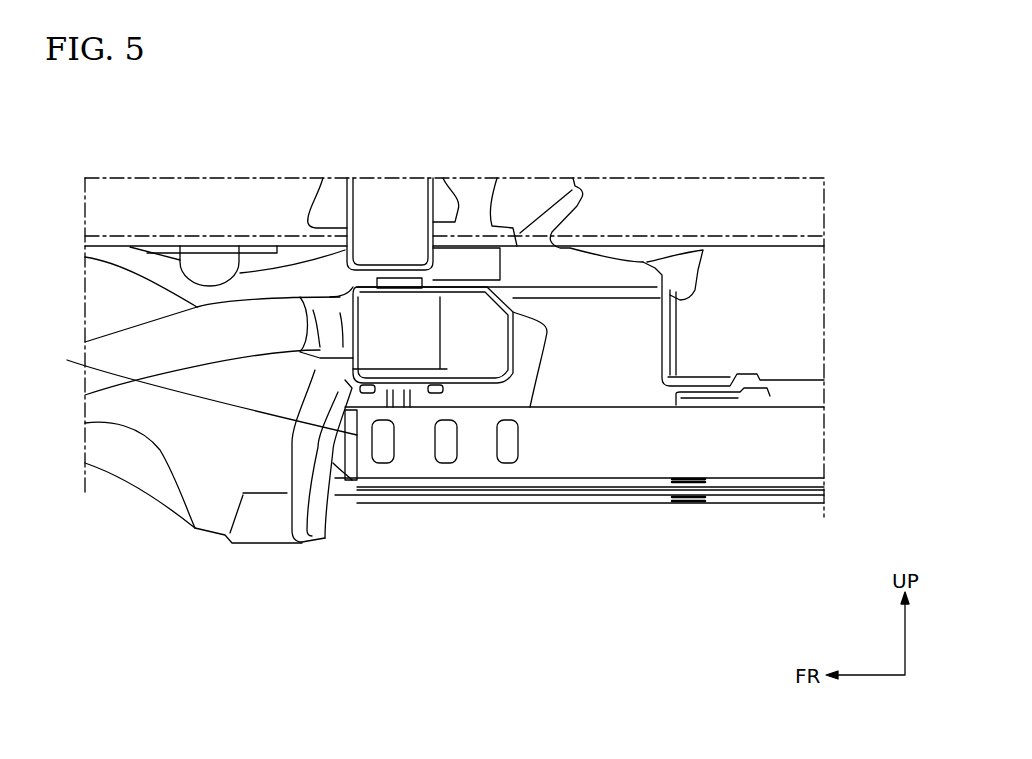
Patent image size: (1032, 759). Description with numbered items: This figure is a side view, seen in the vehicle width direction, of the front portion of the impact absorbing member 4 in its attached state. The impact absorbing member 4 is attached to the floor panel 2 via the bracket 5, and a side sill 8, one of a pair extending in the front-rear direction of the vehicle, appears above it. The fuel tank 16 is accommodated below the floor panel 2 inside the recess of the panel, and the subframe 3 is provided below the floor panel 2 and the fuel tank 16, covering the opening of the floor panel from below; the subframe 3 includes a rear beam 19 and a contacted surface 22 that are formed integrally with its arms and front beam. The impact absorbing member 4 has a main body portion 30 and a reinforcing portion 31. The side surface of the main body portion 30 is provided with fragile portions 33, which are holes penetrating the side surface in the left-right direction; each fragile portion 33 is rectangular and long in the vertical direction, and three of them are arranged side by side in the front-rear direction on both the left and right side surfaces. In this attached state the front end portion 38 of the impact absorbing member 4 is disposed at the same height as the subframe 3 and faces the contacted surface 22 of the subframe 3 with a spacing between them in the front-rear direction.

The floor panel 2 is at (826, 272).
The subframe 3 is at (190, 523).
The impact absorbing member 4 is at (742, 487).
The bracket 5 is at (688, 350).
The side sill 8 is at (680, 198).
The fuel tank 16 is at (157, 267).
The rear beam 19 is at (193, 457).
The contacted surface 22 is at (351, 453).
The main body portion 30 is at (665, 443).
The reinforcing portion 31 is at (357, 480).
The fragile portion 33 is at (392, 455).
The front end portion 38 is at (83, 362).